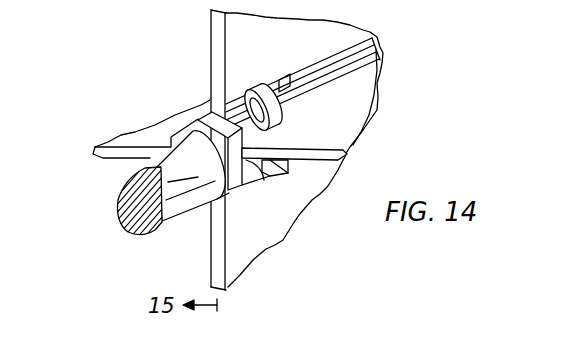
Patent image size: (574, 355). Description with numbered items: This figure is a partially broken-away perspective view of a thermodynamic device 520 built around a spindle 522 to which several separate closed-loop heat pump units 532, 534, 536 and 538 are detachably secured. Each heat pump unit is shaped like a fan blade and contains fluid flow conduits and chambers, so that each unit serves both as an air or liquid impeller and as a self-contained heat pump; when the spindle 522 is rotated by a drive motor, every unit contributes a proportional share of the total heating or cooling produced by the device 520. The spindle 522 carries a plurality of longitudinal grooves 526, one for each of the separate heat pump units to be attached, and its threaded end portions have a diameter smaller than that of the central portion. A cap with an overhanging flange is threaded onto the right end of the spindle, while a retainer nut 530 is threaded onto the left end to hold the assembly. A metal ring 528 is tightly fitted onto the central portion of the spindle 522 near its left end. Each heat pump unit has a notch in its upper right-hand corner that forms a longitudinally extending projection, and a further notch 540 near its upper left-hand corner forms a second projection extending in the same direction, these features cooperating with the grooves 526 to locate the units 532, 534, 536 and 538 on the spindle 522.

The thermodynamic device 520 is at (404, 98).
The spindle 522 is at (132, 222).
The longitudinal grooves 526 is at (377, 40).
The metal ring 528 is at (262, 181).
The retainer nut 530 is at (202, 118).
The heat pump unit 532 is at (263, 249).
The heat pump unit 534 is at (352, 145).
The heat pump unit 536 is at (211, 34).
The heat pump unit 538 is at (104, 152).
The notch 540 is at (285, 82).